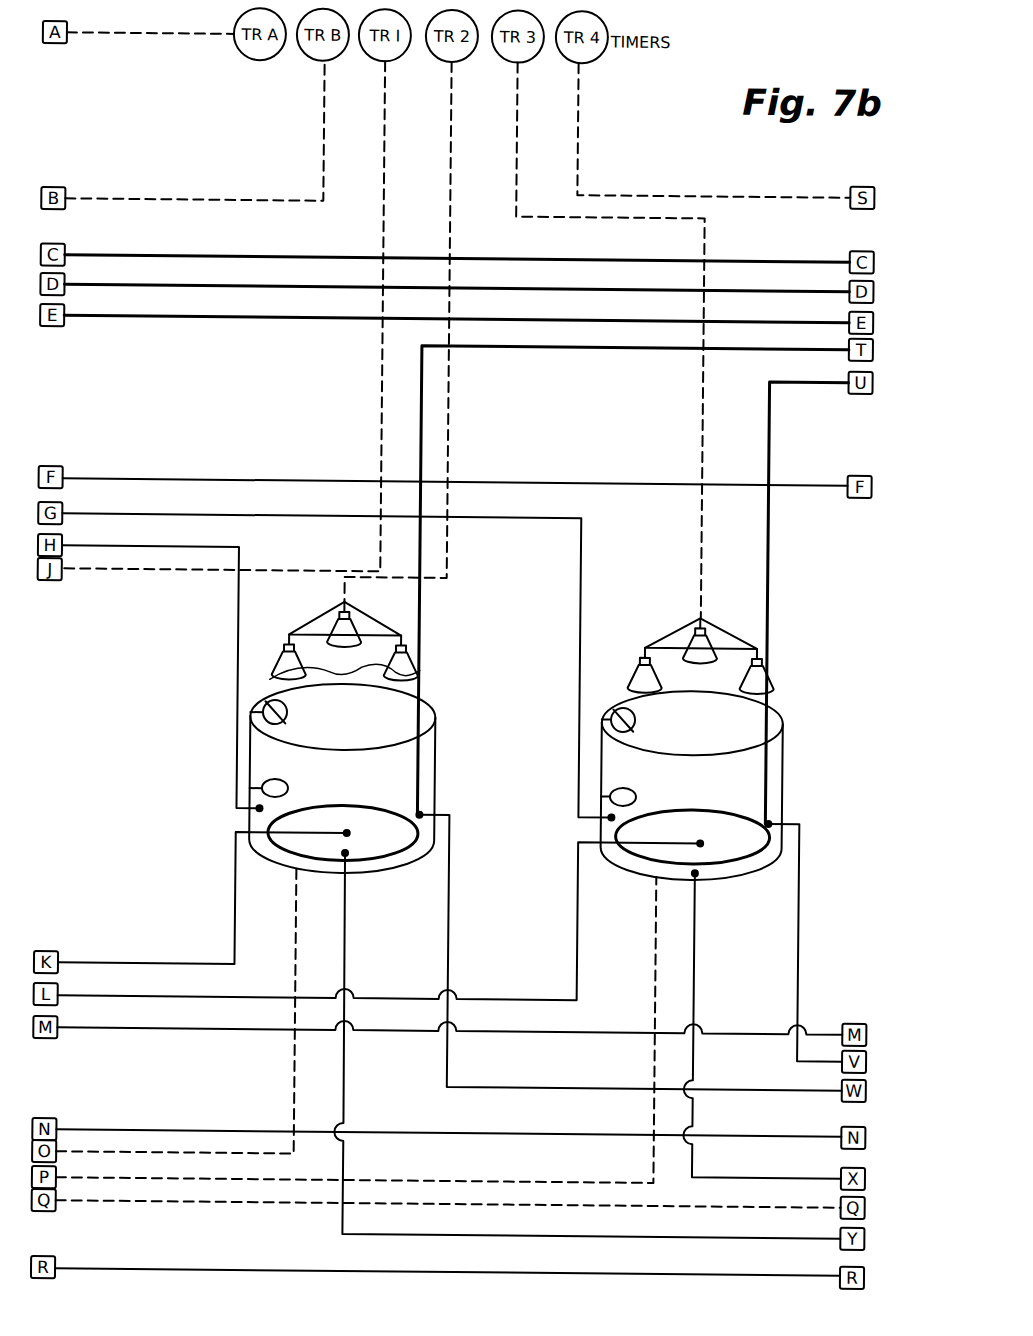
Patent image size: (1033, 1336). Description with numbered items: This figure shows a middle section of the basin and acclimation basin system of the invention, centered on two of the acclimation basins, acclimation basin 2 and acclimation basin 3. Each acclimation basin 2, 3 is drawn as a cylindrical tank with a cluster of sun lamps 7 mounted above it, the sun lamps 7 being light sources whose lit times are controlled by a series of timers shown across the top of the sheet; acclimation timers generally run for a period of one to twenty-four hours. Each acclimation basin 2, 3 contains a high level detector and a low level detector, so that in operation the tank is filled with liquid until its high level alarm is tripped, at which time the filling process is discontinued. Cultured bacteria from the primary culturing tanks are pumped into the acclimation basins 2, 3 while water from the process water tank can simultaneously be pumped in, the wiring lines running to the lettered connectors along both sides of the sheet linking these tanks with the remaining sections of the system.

The sun lamps 7 is at (338, 648).
The acclimation basin 2 is at (342, 778).
The acclimation basin 3 is at (691, 785).